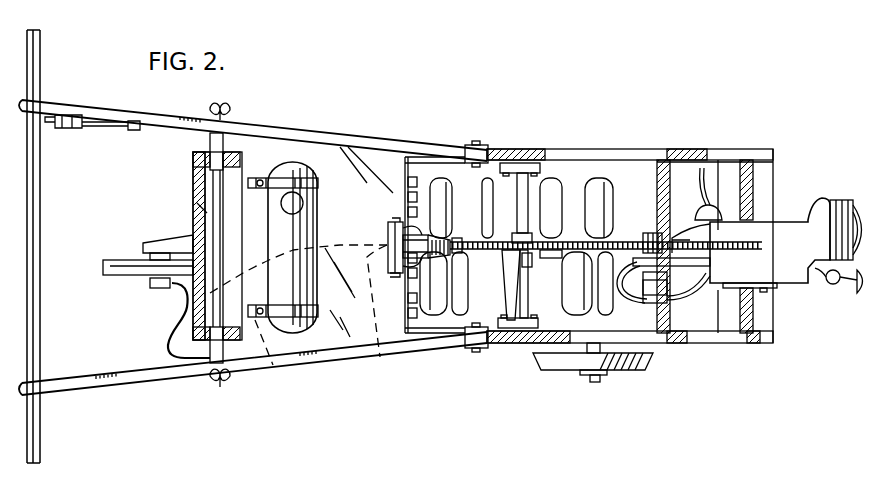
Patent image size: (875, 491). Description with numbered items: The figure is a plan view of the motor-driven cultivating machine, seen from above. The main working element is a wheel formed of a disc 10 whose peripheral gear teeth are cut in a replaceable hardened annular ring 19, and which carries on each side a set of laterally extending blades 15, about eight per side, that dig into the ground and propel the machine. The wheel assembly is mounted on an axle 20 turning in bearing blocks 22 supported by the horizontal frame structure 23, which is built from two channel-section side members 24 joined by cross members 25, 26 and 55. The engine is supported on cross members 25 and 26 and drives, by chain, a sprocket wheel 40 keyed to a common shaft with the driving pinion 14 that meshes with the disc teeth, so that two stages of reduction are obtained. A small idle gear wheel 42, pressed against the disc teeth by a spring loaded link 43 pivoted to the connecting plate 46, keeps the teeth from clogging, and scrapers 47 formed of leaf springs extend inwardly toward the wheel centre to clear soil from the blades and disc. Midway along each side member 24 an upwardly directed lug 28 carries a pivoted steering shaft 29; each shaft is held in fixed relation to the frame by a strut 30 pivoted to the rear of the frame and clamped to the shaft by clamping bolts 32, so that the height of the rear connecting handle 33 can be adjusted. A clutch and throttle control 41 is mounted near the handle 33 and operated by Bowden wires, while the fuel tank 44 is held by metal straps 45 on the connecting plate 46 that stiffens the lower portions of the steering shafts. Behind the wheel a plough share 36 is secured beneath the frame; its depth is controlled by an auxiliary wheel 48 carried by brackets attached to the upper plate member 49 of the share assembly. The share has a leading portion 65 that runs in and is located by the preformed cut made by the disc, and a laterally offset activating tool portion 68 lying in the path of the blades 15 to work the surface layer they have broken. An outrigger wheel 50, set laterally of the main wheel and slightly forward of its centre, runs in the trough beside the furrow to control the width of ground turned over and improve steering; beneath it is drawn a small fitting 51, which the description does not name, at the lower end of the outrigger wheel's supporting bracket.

The disc 10 is at (492, 252).
The driving pinion 14 is at (643, 240).
The blades 15 is at (556, 202).
The annular ring 19 is at (549, 259).
The axle 20 is at (522, 200).
The bearing blocks 22 is at (515, 163).
The horizontal frame structure 23 is at (781, 144).
The side members 24 is at (616, 158).
The cross member 25 is at (748, 322).
The cross member 26 is at (670, 318).
The lug 28 is at (476, 150).
The steering shaft 29 is at (166, 116).
The strut 30 is at (208, 140).
The clamping bolts 32 is at (228, 112).
The rear connecting handle 33 is at (37, 240).
The plough share 36 is at (177, 333).
The sprocket wheel 40 is at (646, 280).
The clutch and throttle control 41 is at (68, 130).
The idle gear wheel 42 is at (458, 238).
The spring loaded link 43 is at (403, 226).
The fuel tank 44 is at (306, 242).
The metal straps 45 is at (318, 183).
The connecting plate 46 is at (347, 335).
The scrapers 47 is at (410, 317).
The auxiliary wheel 48 is at (112, 260).
The upper plate member 49 is at (153, 243).
The outrigger wheel 50 is at (556, 371).
The bolt 51 is at (595, 382).
The cross member 55 is at (200, 192).
The leading portion 65 is at (376, 345).
The activating tool portion 68 is at (298, 320).